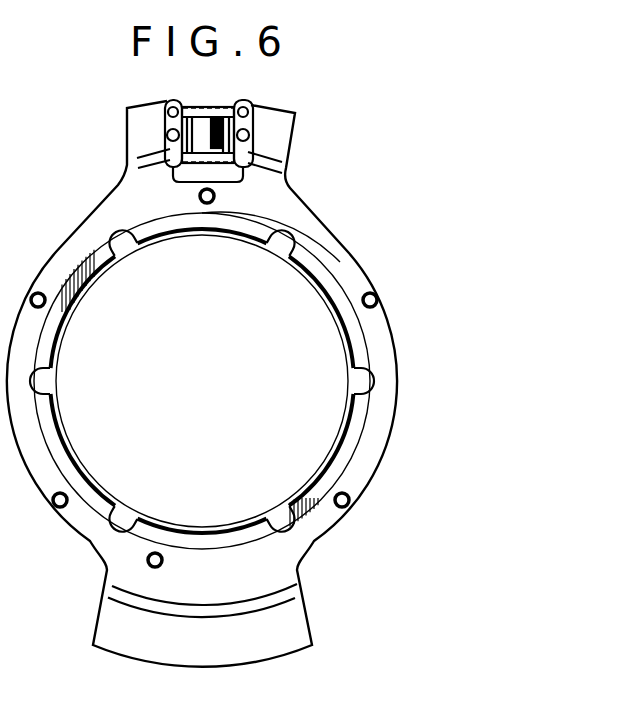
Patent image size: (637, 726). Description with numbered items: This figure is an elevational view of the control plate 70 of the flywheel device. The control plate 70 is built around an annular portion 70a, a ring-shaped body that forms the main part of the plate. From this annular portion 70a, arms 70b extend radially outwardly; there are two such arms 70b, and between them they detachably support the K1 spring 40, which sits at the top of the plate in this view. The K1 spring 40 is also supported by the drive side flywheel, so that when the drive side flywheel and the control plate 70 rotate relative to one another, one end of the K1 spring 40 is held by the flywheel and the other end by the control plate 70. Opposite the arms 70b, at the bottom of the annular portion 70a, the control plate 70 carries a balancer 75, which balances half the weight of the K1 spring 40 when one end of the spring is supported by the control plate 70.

The K1 spring 40 is at (192, 107).
The control plate 70 is at (385, 330).
The annular portion 70a is at (340, 243).
The arms 70b is at (275, 130).
The balancer 75 is at (280, 615).